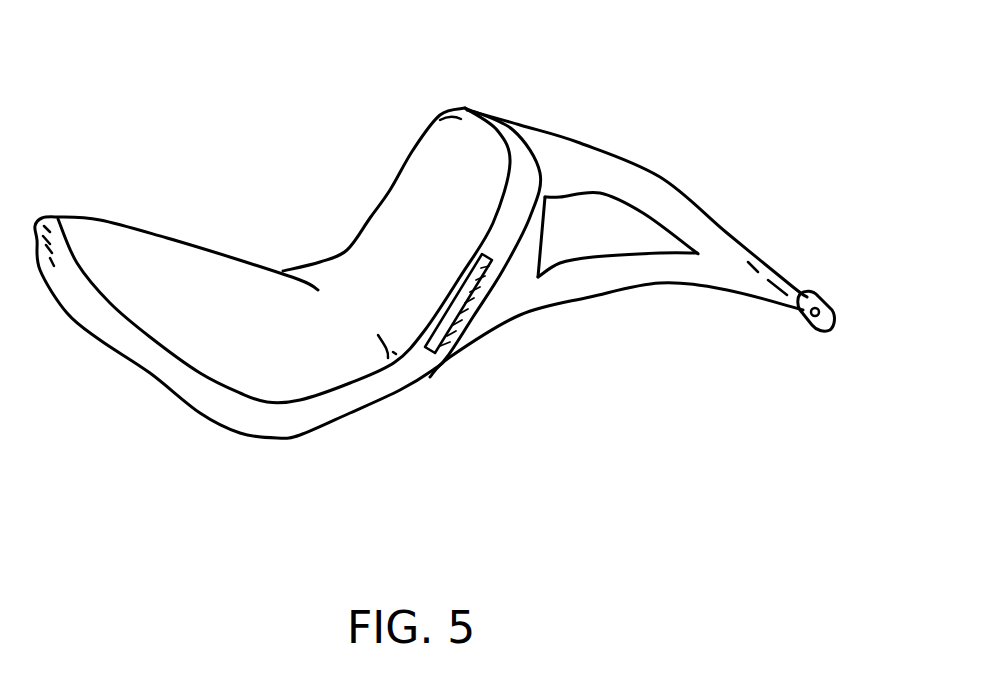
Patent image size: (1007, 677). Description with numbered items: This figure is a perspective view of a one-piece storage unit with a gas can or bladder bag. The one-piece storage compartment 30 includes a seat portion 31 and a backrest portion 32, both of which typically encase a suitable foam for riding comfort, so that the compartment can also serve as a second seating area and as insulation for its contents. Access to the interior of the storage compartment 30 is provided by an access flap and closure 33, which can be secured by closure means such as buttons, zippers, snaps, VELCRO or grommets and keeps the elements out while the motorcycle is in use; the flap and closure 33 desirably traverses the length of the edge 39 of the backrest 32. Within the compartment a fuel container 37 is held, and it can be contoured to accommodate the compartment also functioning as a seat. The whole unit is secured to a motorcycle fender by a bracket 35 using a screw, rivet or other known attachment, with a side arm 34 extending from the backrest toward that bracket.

The one-piece storage compartment 30 is at (237, 133).
The seat portion 31 is at (277, 370).
The backrest portion 32 is at (367, 303).
The access flap and closure 33 is at (480, 303).
The side arm 34 is at (717, 235).
The bracket 35 is at (832, 317).
The fuel container 37 is at (623, 213).
The edge 39 is at (465, 108).